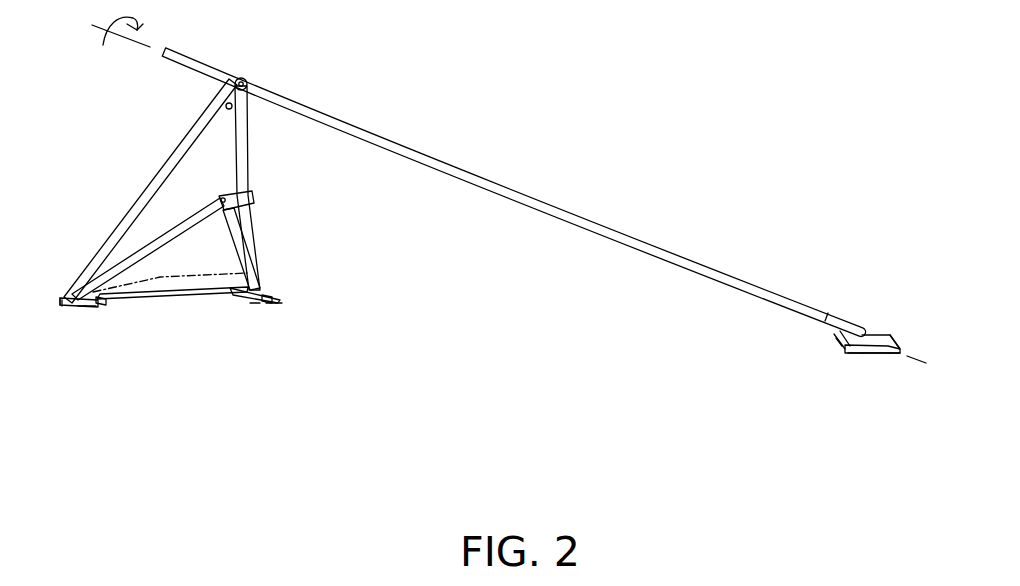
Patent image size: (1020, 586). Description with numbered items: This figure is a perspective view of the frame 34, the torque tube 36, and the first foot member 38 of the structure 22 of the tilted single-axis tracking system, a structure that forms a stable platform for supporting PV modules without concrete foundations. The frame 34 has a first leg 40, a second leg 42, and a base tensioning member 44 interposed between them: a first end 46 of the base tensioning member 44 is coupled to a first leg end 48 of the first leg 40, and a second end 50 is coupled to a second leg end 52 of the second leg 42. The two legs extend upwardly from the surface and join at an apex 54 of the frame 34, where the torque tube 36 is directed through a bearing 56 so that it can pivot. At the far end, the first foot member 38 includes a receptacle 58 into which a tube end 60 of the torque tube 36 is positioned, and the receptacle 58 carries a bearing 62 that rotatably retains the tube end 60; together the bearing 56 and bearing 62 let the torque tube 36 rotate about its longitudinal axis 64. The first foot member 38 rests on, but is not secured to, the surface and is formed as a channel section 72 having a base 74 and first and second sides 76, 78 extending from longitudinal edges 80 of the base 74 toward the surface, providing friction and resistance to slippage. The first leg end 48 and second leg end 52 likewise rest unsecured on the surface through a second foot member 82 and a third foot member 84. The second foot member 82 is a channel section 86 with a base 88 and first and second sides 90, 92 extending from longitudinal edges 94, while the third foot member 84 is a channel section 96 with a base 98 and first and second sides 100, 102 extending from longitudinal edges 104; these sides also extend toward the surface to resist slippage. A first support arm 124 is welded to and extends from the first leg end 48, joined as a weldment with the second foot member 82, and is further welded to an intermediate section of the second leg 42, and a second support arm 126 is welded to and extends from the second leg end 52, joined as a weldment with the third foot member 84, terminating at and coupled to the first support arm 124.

The structure 22 is at (600, 449).
The frame 34 is at (201, 363).
The torque tube 36 is at (534, 200).
The first foot member 38 is at (880, 333).
The first leg 40 is at (160, 170).
The second leg 42 is at (248, 173).
The base tensioning member 44 is at (165, 293).
The first end 46 is at (140, 280).
The first leg end 48 is at (78, 287).
The second end 50 is at (229, 258).
The second leg end 52 is at (266, 262).
The apex 54 is at (249, 93).
The bearing 56 is at (245, 80).
The receptacle 58 is at (843, 312).
The tube end 60 is at (818, 325).
The bearing 62 is at (829, 316).
The longitudinal axis 64 is at (142, 38).
The channel section 72 is at (855, 355).
The base 74 is at (897, 357).
The first side 76 is at (830, 337).
The second side 78 is at (873, 352).
The longitudinal edges 80 is at (887, 338).
The second foot member 82 is at (64, 308).
The third foot member 84 is at (273, 295).
The channel section 86 is at (100, 476).
The base 88 is at (90, 308).
The first side 90 is at (83, 310).
The second side 92 is at (107, 299).
The longitudinal edges 94 is at (60, 308).
The channel section 96 is at (349, 330).
The base 98 is at (270, 304).
The first side 100 is at (255, 304).
The second side 102 is at (280, 304).
The longitudinal edges 104 is at (267, 290).
The first support arm 124 is at (135, 258).
The second support arm 126 is at (248, 226).